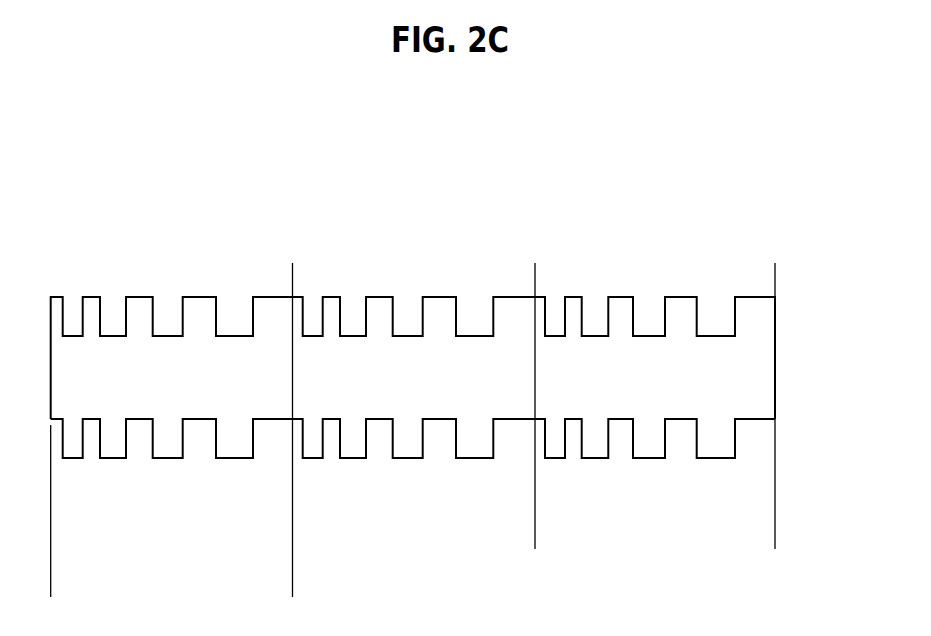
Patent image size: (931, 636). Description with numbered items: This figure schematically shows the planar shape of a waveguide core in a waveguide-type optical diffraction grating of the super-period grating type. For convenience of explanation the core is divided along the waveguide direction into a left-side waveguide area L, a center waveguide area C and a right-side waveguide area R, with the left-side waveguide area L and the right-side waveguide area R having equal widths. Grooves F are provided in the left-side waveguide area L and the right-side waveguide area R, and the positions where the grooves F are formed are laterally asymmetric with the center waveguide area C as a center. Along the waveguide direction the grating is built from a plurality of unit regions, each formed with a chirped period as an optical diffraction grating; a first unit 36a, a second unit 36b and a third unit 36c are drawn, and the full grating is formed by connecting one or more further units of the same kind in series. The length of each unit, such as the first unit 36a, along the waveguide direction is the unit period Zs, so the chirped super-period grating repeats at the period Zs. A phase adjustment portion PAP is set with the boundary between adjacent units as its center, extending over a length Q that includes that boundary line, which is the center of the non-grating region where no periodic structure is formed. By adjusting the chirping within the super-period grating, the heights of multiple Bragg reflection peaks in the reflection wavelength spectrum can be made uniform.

The first unit 36a is at (292, 541).
The second unit 36b is at (535, 541).
The third unit 36c is at (775, 541).
The unit period Zs is at (51, 588).
The length of the phase adjustment portion Q is at (168, 330).
The phase adjustment portion PAP is at (418, 213).
The grooves F is at (114, 312).
The left-side waveguide area L is at (742, 336).
The center waveguide area C is at (742, 419).
The right-side waveguide area R is at (742, 458).